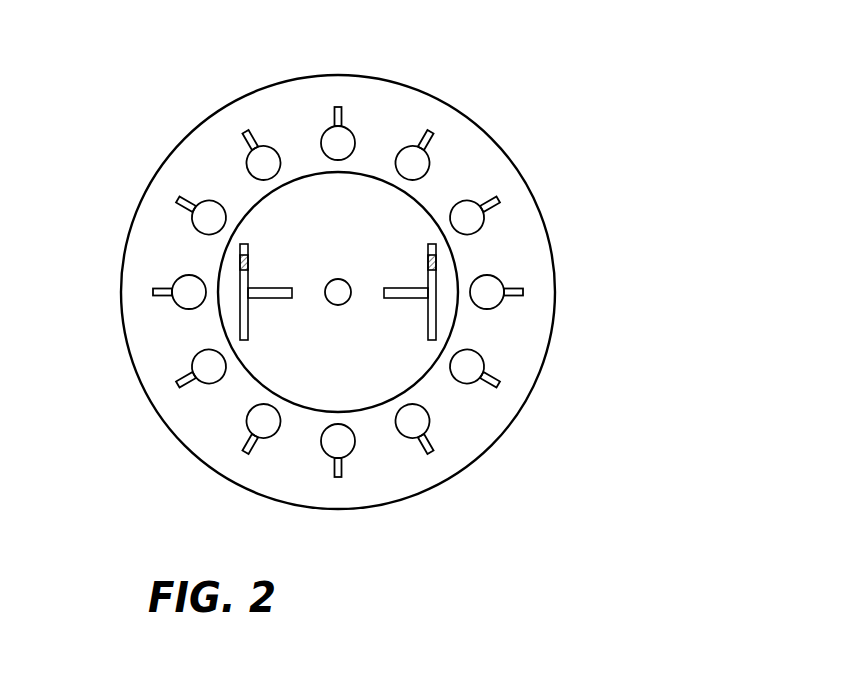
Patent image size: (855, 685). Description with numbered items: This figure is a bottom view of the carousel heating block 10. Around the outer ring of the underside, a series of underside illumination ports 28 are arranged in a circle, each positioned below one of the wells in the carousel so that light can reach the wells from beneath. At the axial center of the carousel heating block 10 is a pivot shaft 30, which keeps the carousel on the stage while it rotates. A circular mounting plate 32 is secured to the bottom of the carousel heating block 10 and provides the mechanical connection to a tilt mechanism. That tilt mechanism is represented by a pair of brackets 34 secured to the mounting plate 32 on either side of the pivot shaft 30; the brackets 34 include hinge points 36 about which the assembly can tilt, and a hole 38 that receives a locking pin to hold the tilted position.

The carousel heating block 10 is at (552, 72).
The underside illumination ports 28 is at (200, 201).
The pivot shaft 30 is at (340, 279).
The mounting plate 32 is at (393, 370).
The brackets 34 is at (240, 316).
The hinge points 36 is at (240, 264).
The hole for a locking pin 38 is at (240, 253).